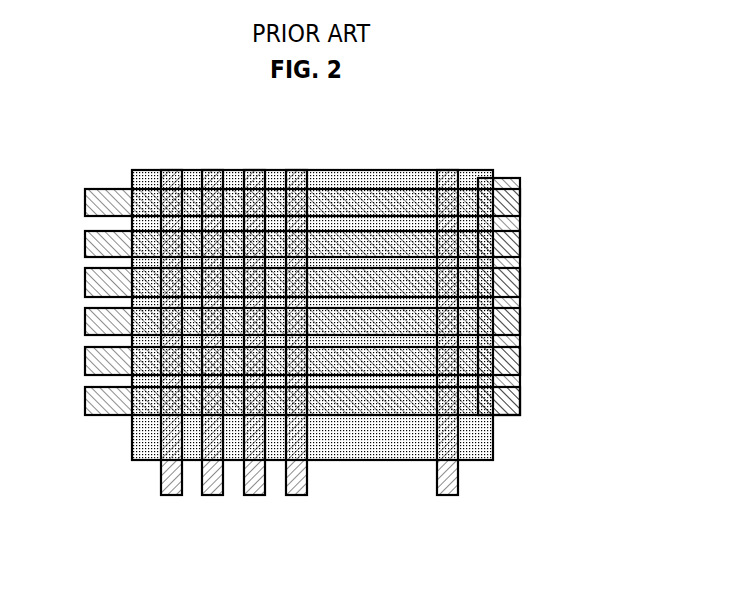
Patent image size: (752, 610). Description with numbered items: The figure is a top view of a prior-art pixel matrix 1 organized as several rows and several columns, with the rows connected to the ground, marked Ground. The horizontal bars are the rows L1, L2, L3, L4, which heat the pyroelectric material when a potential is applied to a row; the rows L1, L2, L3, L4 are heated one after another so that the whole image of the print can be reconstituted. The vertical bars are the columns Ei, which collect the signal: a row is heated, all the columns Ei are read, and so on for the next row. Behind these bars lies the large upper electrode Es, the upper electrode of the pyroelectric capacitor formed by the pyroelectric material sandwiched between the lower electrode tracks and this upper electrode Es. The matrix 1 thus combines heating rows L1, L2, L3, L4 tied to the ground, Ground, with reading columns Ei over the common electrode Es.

The touch sensor (prior art) 1 is at (394, 125).
The upper electrode Es is at (362, 443).
The columns Ei is at (169, 494).
The ground Ground is at (518, 296).
The row L1 is at (90, 206).
The row L2 is at (90, 248).
The row L3 is at (90, 284).
The row L4 is at (90, 325).